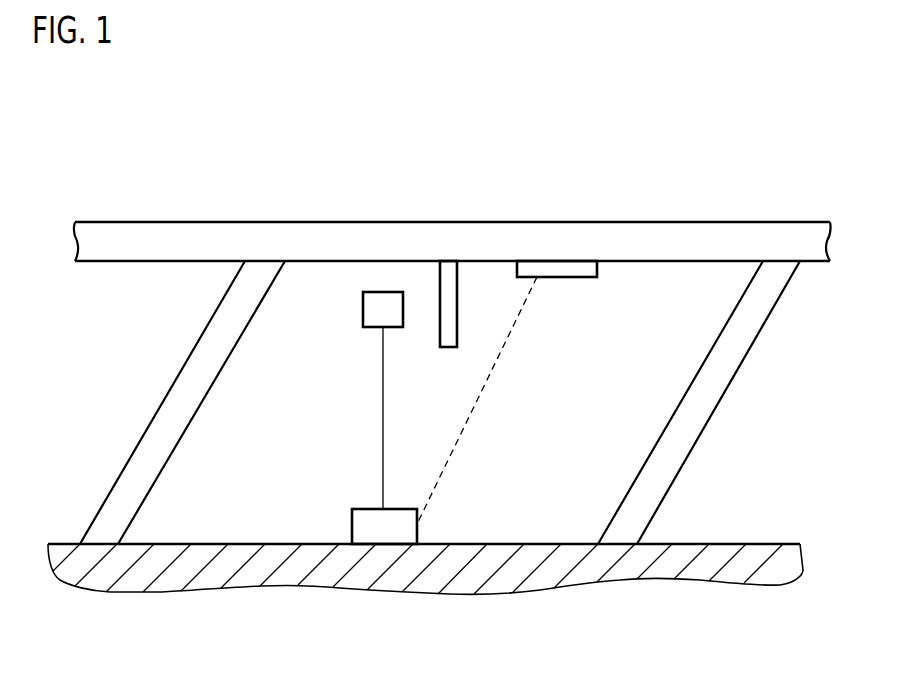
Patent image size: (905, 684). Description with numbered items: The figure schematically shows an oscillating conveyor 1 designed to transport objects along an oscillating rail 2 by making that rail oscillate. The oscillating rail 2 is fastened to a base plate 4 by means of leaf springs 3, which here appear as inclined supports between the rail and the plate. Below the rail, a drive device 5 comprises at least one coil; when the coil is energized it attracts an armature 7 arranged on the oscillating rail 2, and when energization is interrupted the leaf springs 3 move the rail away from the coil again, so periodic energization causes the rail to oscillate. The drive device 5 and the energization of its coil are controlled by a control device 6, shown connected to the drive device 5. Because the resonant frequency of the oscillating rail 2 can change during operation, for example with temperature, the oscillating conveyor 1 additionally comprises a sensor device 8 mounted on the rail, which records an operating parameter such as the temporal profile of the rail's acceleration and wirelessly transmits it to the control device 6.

The oscillating conveyor 1 is at (650, 172).
The oscillating rail 2 is at (400, 222).
The leaf springs 3 is at (175, 450).
The base plate 4 is at (335, 563).
The drive device 5 is at (363, 312).
The control device 6 is at (352, 523).
The armature 7 is at (457, 318).
The sensor device 8 is at (580, 277).